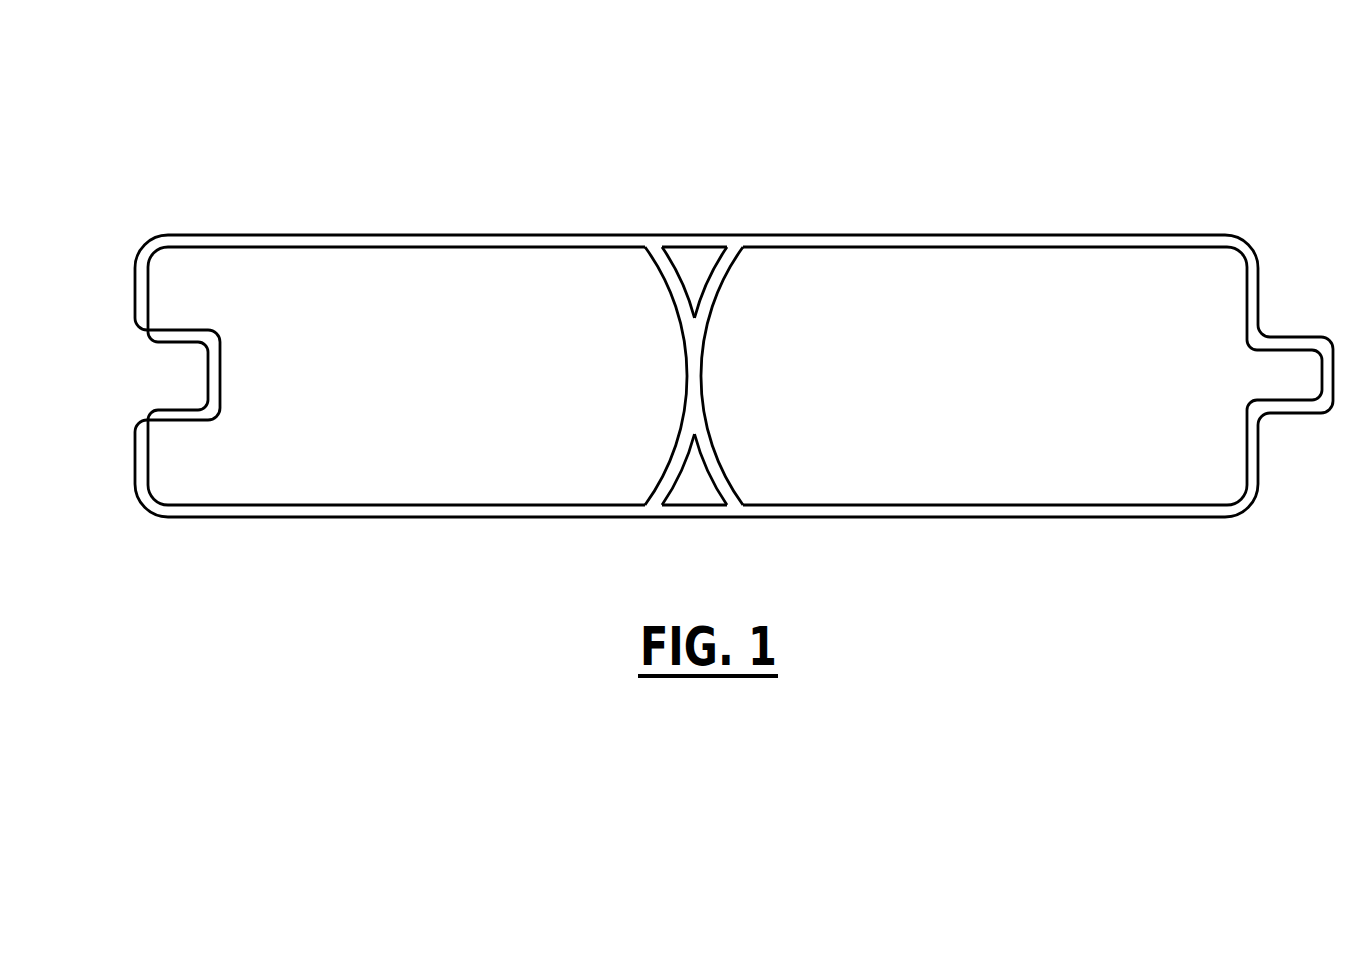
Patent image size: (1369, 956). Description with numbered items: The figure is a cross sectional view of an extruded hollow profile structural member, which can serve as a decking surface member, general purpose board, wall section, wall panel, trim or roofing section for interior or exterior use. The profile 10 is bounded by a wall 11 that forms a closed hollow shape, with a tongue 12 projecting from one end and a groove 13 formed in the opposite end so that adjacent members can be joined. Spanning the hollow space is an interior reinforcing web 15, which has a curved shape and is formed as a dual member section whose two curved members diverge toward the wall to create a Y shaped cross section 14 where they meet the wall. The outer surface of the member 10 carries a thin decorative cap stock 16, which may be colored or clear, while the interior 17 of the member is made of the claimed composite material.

The profile 10 is at (908, 140).
The wall 11 is at (842, 517).
The tongue 12 is at (1272, 417).
The groove 13 is at (223, 378).
The Y shaped cross section 14 is at (727, 272).
The interior reinforcing web 15 is at (702, 367).
The decorative cap stock 16 is at (590, 235).
The interior 17 is at (1078, 505).